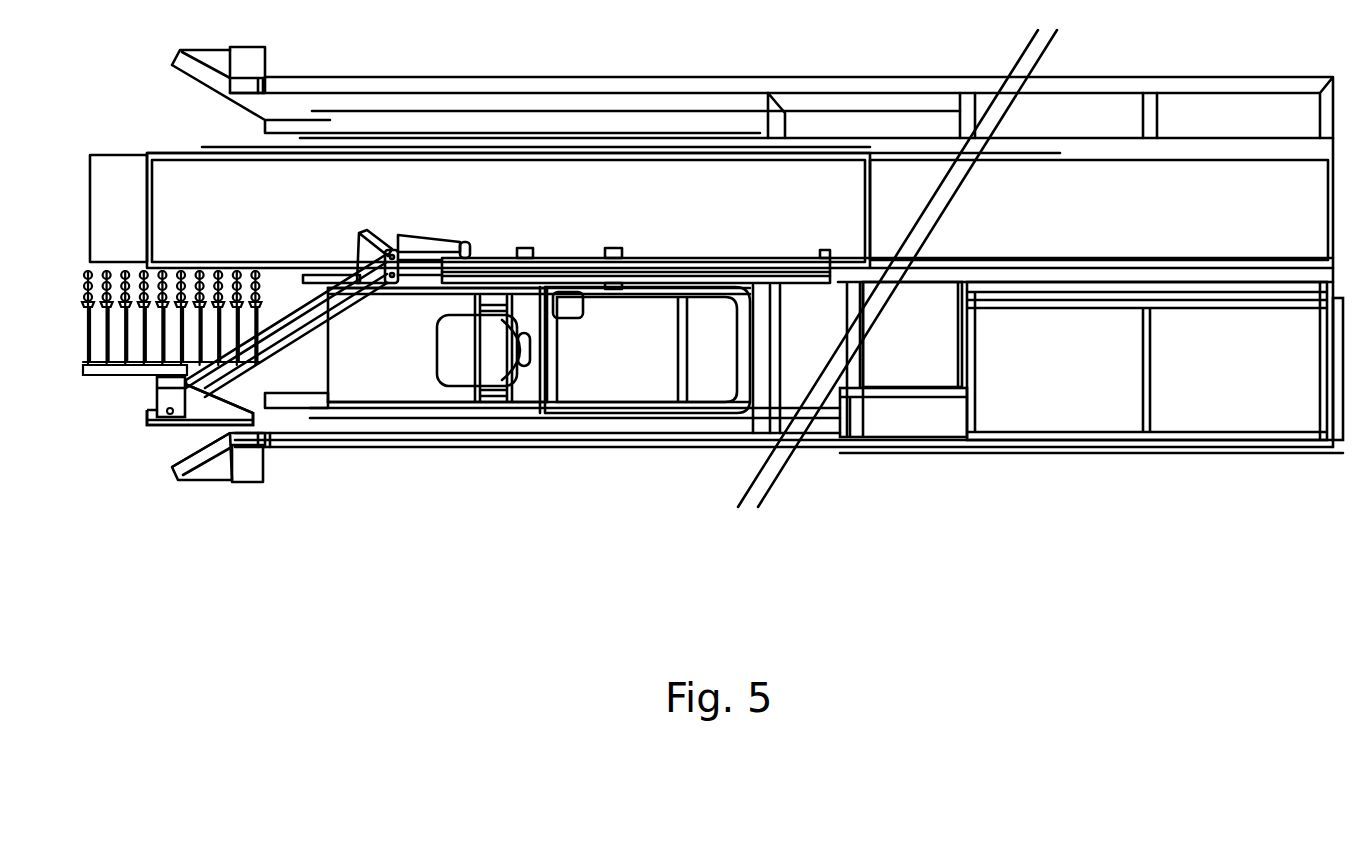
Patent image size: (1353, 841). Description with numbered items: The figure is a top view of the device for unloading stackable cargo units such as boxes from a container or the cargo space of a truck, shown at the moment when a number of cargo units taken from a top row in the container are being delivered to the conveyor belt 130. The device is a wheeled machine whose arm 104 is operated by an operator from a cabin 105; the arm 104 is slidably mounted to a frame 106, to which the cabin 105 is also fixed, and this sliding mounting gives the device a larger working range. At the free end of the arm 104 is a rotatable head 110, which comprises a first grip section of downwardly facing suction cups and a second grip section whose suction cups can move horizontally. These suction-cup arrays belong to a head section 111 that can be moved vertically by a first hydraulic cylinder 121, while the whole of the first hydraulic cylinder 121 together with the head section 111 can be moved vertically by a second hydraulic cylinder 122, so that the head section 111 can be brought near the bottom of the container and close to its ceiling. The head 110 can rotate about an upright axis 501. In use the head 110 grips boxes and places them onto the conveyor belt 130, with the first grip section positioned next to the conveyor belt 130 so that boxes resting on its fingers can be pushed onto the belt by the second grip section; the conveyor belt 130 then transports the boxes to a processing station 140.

The arm 104 is at (277, 360).
The cabin 105 is at (393, 405).
The frame 106 is at (572, 405).
The rotatable head 110 is at (162, 443).
The head section 111 is at (102, 400).
The first hydraulic cylinder 121 is at (185, 384).
The second hydraulic cylinder 122 is at (157, 382).
The conveyor belt 130 is at (753, 227).
The processing station 140 is at (1060, 408).
The upright axis 501 is at (173, 414).